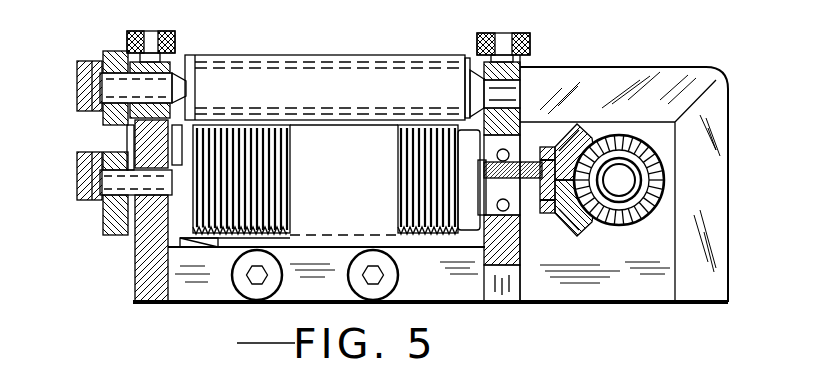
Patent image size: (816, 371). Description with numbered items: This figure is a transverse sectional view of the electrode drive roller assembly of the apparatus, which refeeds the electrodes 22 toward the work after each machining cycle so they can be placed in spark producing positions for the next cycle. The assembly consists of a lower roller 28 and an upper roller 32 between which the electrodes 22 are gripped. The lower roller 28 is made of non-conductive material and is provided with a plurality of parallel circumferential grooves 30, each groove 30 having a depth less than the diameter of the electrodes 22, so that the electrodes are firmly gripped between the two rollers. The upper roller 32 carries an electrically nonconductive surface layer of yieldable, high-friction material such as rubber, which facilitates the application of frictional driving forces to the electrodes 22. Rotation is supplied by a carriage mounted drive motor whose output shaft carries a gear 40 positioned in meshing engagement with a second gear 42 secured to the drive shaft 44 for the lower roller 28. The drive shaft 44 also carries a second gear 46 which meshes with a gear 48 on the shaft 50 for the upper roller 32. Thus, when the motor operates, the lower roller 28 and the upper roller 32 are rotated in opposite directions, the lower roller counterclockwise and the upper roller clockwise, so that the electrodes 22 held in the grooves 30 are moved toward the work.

The electrodes 22 is at (228, 124).
The lower roller 28 is at (333, 158).
The circumferential grooves 30 is at (218, 233).
The upper roller 32 is at (355, 102).
The gear 40 is at (622, 232).
The second gear 42 is at (556, 220).
The drive shaft 44 is at (557, 147).
The second gear 46 is at (113, 210).
The gear 48 is at (100, 61).
The shaft 50 is at (172, 68).